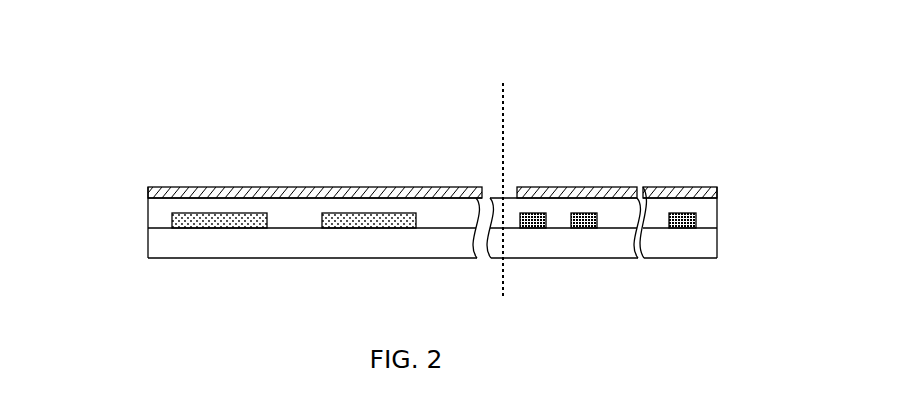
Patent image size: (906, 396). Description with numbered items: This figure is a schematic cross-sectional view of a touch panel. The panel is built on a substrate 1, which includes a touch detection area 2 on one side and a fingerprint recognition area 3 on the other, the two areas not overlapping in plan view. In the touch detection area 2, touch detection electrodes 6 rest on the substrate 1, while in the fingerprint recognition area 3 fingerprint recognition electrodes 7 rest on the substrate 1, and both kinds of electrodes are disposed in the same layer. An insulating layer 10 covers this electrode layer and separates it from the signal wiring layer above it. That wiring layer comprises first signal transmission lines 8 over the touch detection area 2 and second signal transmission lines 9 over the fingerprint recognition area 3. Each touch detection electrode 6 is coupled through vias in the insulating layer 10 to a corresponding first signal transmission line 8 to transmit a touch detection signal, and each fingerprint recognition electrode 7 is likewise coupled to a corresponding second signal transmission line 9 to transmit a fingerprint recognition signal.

The substrate 1 is at (160, 245).
The touch detection area 2 is at (301, 138).
The fingerprint recognition area 3 is at (639, 138).
The touch detection electrode 6 is at (188, 228).
The fingerprint recognition electrode 7 is at (583, 228).
The first signal transmission line 8 is at (210, 188).
The second signal transmission line 9 is at (695, 188).
The insulating layer 10 is at (160, 210).